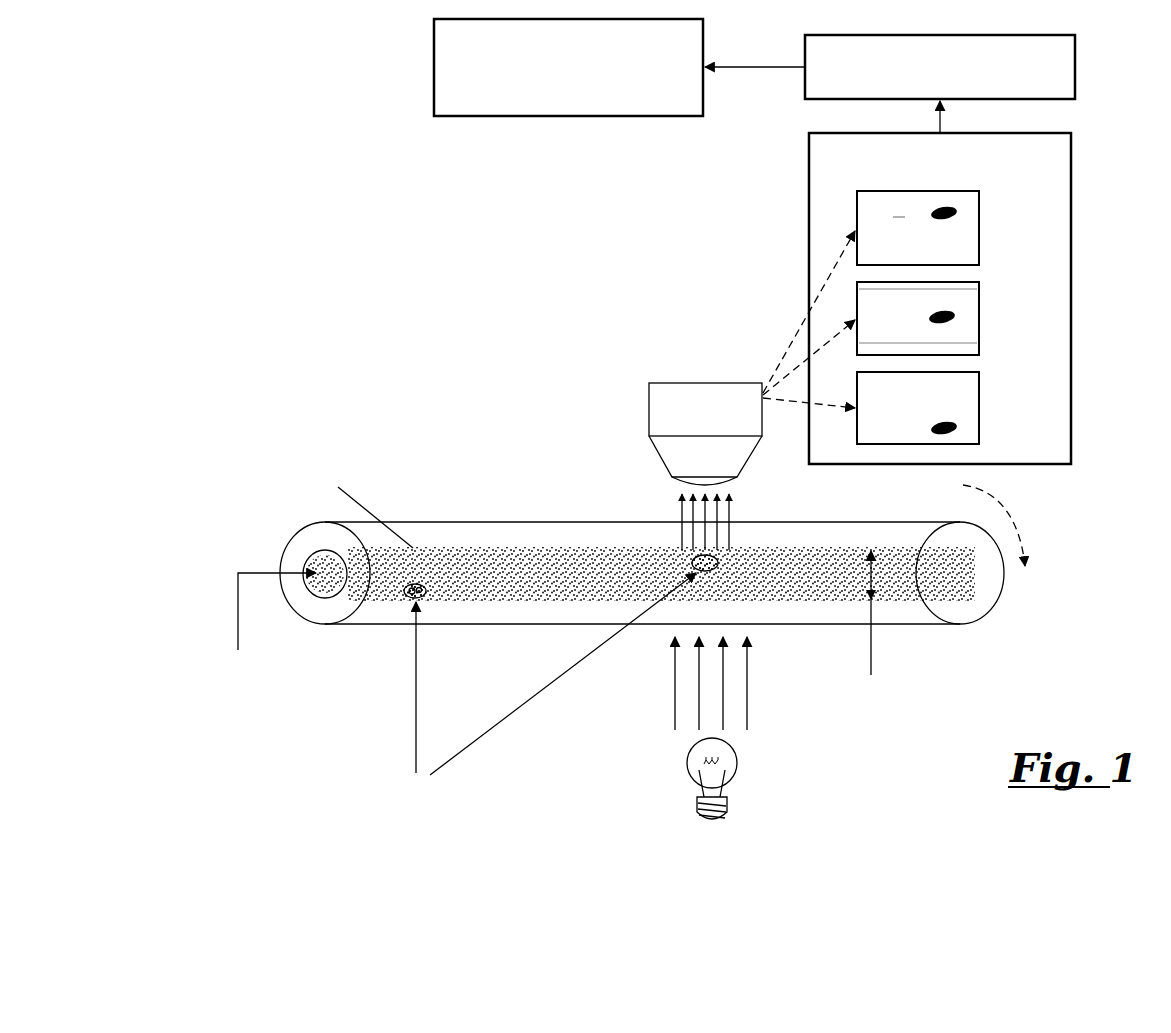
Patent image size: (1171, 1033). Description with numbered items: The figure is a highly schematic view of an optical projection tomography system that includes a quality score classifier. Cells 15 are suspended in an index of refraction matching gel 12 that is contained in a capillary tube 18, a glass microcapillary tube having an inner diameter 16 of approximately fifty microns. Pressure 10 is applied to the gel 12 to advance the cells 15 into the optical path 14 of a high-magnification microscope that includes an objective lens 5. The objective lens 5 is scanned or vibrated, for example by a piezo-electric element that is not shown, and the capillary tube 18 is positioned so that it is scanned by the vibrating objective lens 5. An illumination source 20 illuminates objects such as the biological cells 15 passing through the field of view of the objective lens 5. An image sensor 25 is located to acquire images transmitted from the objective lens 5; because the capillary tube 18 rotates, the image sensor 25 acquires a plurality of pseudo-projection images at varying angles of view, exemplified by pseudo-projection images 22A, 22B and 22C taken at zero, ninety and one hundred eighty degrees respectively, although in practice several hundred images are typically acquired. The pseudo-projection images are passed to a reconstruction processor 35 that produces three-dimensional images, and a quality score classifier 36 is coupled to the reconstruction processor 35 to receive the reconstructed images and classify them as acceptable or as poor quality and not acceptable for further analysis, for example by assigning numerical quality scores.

The quality score classifier 36 is at (434, 100).
The reconstruction processor 35 is at (805, 98).
The image sensor 25 is at (1071, 160).
The pseudo-projection image 22A is at (979, 250).
The pseudo-projection image 22B is at (979, 340).
The pseudo-projection image 22C is at (979, 430).
The objective lens 5 is at (649, 386).
The capillary tube 18 is at (1002, 600).
The index of refraction matching gel 12 is at (462, 560).
The optical path 14 is at (680, 499).
The cells 15 is at (422, 598).
The pressure 10 is at (238, 613).
The inner diameter 16 is at (876, 578).
The illumination source 20 is at (737, 772).